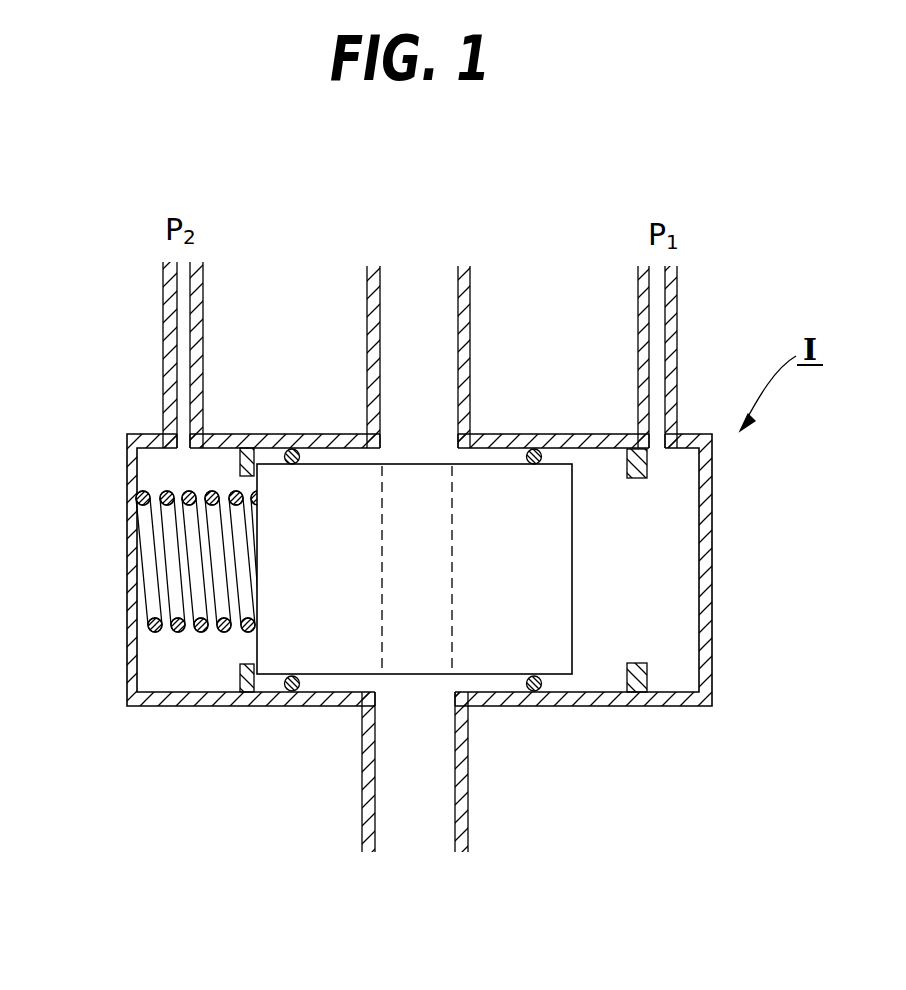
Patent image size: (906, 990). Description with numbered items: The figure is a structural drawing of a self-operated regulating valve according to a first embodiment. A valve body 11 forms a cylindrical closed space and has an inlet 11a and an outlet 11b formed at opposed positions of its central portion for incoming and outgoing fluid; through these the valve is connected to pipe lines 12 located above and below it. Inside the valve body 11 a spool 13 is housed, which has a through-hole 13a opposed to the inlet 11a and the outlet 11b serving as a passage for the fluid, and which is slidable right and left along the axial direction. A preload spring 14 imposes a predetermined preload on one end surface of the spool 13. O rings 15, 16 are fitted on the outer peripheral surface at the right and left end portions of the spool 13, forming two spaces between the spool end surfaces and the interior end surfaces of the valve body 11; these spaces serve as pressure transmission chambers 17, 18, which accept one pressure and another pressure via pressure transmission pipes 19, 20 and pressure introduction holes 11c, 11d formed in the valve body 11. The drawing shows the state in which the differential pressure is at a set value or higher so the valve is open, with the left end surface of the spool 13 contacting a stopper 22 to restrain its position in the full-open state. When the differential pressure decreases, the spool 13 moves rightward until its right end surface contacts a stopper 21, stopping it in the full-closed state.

The valve body 11 is at (706, 650).
The inlet 11a is at (418, 440).
The outlet 11b is at (405, 705).
The pressure introduction hole 11c is at (659, 442).
The pressure introduction hole 11d is at (180, 440).
The pipe line 12 is at (468, 290).
The spool 13 is at (345, 662).
The through-hole 13a is at (390, 497).
The preload spring 14 is at (150, 575).
The O ring 15 is at (546, 690).
The O ring 16 is at (280, 688).
The pressure transmission chamber 17 is at (673, 530).
The pressure transmission chamber 18 is at (152, 452).
The pressure transmission pipe 19 is at (677, 293).
The pressure transmission pipe 20 is at (163, 292).
The stopper 21 is at (612, 440).
The stopper 22 is at (240, 466).